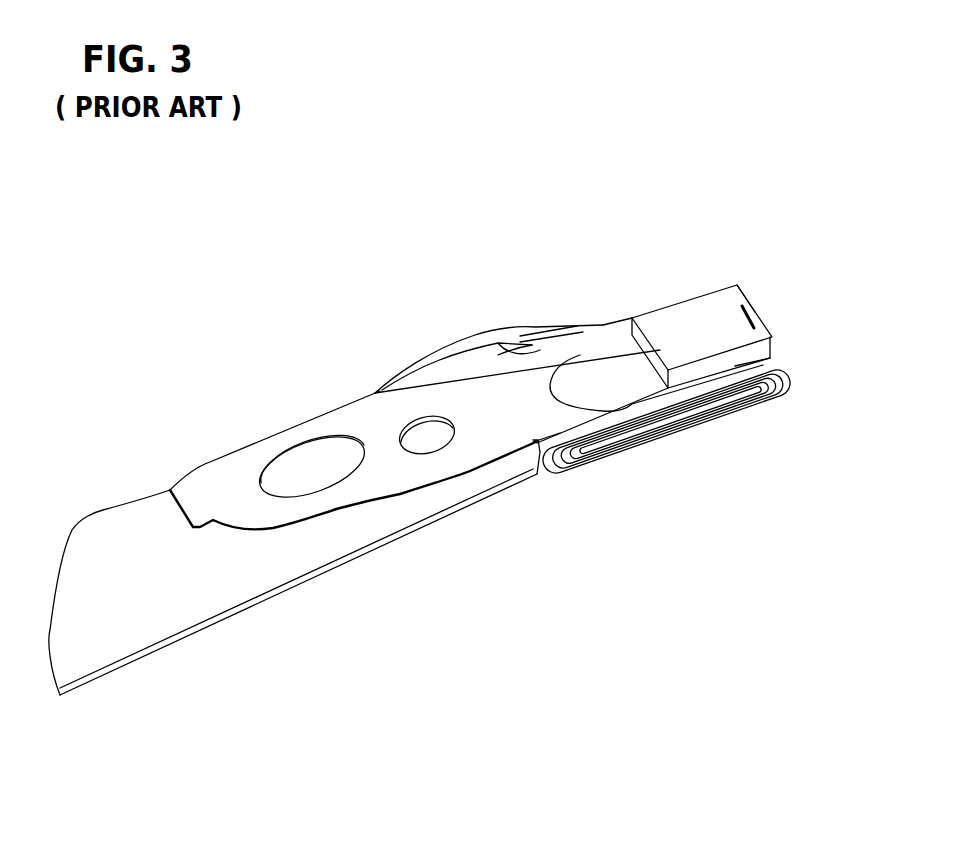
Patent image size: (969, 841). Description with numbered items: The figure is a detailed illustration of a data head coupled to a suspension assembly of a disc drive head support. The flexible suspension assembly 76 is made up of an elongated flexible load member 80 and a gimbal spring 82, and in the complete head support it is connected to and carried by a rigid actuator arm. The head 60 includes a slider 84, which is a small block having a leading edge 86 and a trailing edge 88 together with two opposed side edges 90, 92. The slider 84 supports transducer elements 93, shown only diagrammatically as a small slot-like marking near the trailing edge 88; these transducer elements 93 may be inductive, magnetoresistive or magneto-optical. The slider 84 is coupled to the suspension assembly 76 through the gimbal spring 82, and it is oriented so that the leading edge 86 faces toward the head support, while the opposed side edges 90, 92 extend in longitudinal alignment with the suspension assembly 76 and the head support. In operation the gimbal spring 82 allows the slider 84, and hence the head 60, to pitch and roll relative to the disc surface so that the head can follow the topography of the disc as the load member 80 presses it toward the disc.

The head 60 is at (771, 283).
The suspension assembly 76 is at (541, 525).
The load member 80 is at (148, 563).
The gimbal spring 82 is at (435, 463).
The slider 84 is at (678, 347).
The leading edge 86 is at (550, 381).
The trailing edge 88 is at (755, 307).
The side edge 90 is at (652, 313).
The side edge 92 is at (748, 361).
The transducer elements 93 is at (757, 324).